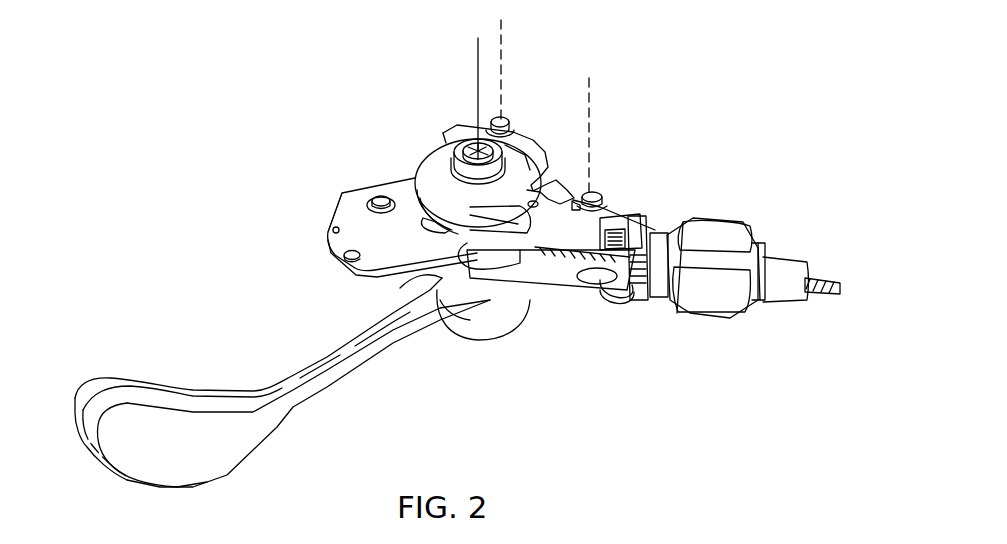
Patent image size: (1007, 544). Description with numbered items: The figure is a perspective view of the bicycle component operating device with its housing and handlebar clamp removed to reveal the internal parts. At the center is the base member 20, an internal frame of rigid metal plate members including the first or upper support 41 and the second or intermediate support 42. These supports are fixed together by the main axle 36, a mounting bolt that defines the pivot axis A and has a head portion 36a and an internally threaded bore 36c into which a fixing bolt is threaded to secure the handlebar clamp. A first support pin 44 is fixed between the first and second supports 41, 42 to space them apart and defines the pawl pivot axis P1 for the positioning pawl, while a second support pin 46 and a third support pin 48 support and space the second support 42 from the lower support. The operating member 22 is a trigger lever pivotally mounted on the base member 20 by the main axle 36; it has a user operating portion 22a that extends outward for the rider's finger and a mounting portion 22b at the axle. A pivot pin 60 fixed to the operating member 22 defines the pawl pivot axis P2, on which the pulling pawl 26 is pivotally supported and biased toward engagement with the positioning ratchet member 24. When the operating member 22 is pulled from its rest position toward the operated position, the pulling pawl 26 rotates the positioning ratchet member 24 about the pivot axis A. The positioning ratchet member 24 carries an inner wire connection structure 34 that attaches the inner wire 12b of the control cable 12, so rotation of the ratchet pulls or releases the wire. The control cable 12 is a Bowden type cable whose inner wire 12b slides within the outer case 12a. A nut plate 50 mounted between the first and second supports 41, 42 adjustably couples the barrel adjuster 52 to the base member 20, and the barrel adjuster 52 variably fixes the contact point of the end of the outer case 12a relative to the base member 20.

The control cable 12 is at (855, 203).
The outer case 12a is at (779, 258).
The inner wire 12b is at (823, 278).
The base member 20 is at (321, 222).
The operating member 22 is at (191, 384).
The user operating portion 22a is at (200, 447).
The mounting portion 22b is at (487, 327).
The positioning ratchet member 24 is at (415, 189).
The pulling pawl 26 is at (535, 137).
The inner wire connection structure 34 is at (477, 230).
The main axle 36 is at (460, 158).
The head portion 36a is at (535, 166).
The internally threaded bore 36c is at (470, 146).
The first support 41 is at (600, 222).
The second support 42 is at (352, 211).
The first support pin 44 is at (598, 195).
The second support pin 46 is at (613, 310).
The third support pin 48 is at (380, 198).
The nut plate 50 is at (620, 293).
The barrel adjuster 52 is at (696, 318).
The pivot pin 60 is at (503, 120).
The pivot axis A is at (476, 55).
The pawl pivot axis P1 is at (592, 90).
The pawl pivot axis P2 is at (506, 35).